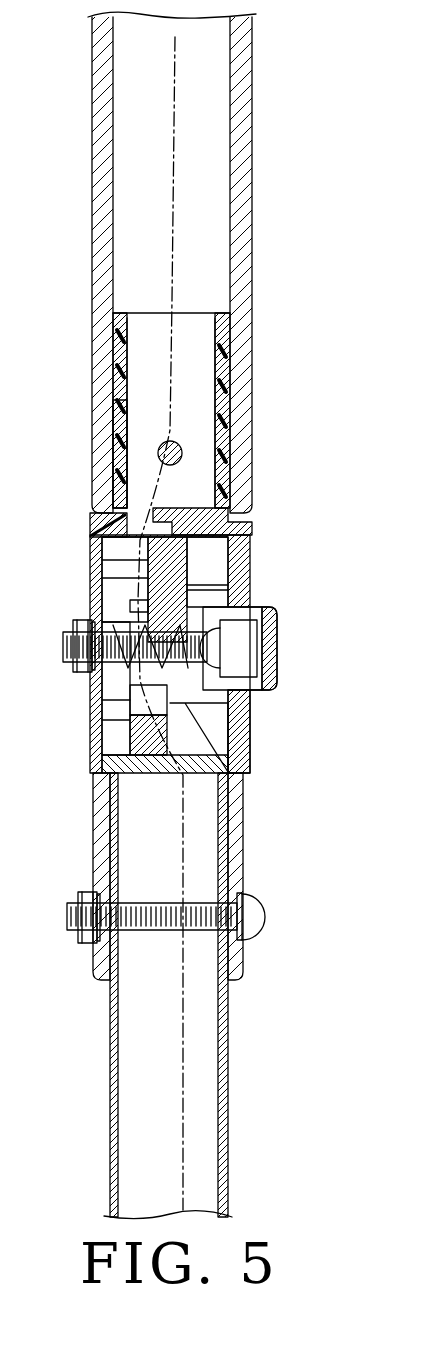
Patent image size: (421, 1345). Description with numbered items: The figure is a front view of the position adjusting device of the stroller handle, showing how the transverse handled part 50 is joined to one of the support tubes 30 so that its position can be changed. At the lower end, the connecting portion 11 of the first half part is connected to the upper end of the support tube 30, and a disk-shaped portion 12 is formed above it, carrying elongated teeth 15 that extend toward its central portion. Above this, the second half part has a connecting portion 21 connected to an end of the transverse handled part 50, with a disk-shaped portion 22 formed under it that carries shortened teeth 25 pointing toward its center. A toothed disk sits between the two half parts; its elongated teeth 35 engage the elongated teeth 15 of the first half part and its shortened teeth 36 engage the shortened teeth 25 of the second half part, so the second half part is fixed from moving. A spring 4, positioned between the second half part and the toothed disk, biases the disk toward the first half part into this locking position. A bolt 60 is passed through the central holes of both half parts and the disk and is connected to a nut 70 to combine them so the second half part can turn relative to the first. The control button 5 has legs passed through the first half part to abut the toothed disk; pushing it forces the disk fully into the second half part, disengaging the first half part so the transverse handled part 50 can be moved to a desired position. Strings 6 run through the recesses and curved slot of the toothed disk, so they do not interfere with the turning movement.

The transverse handled part 50 is at (245, 143).
The strings 6 is at (172, 270).
The connecting portion 21 is at (120, 410).
The shortened teeth 25 is at (98, 520).
The disk-shaped portion 22 is at (90, 562).
The elongated teeth 35 is at (252, 533).
The elongated teeth 15 is at (215, 560).
The bolt 60 is at (217, 647).
The control button 5 is at (272, 653).
The nut 70 is at (82, 623).
The spring 4 is at (102, 688).
The shortened teeth 36 is at (92, 760).
The disk-shaped portion 12 is at (242, 747).
The connecting portion 11 is at (243, 860).
The support tubes 30 is at (228, 1088).